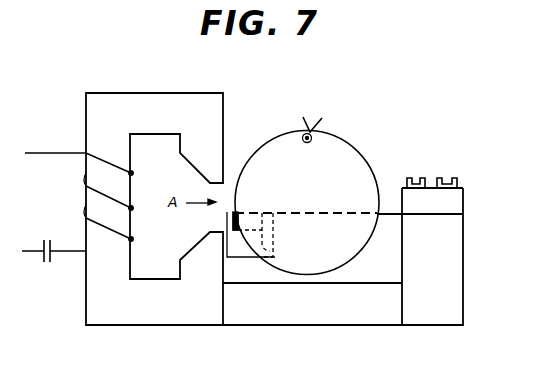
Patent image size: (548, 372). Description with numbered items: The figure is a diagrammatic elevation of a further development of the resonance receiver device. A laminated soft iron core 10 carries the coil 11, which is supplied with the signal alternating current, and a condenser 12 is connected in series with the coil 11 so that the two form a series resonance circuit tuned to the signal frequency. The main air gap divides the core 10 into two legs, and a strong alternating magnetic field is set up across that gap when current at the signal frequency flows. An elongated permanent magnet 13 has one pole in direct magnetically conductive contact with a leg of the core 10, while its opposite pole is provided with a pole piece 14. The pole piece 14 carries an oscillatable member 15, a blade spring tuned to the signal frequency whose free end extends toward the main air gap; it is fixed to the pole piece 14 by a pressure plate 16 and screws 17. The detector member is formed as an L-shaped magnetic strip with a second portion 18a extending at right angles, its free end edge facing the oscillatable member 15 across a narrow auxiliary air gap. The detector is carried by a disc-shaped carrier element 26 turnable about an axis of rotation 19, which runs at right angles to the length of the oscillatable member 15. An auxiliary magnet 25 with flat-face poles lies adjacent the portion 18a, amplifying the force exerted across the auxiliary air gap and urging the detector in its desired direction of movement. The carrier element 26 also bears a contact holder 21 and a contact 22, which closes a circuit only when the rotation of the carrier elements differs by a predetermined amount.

The soft iron core 10 is at (133, 95).
The coil 11 is at (35, 152).
The condenser 12 is at (47, 264).
The permanent magnet 13 is at (393, 320).
The pole piece 14 is at (450, 253).
The oscillatable member 15 is at (318, 217).
The pressure plate 16 is at (450, 200).
The screws 17 is at (427, 173).
The second portion of detector member 18a is at (272, 252).
The axis of rotation 19 is at (306, 202).
The contact holder 21 is at (313, 142).
The contact 22 is at (277, 112).
The auxiliary magnet 25 is at (235, 247).
The carrier element 26 is at (372, 165).